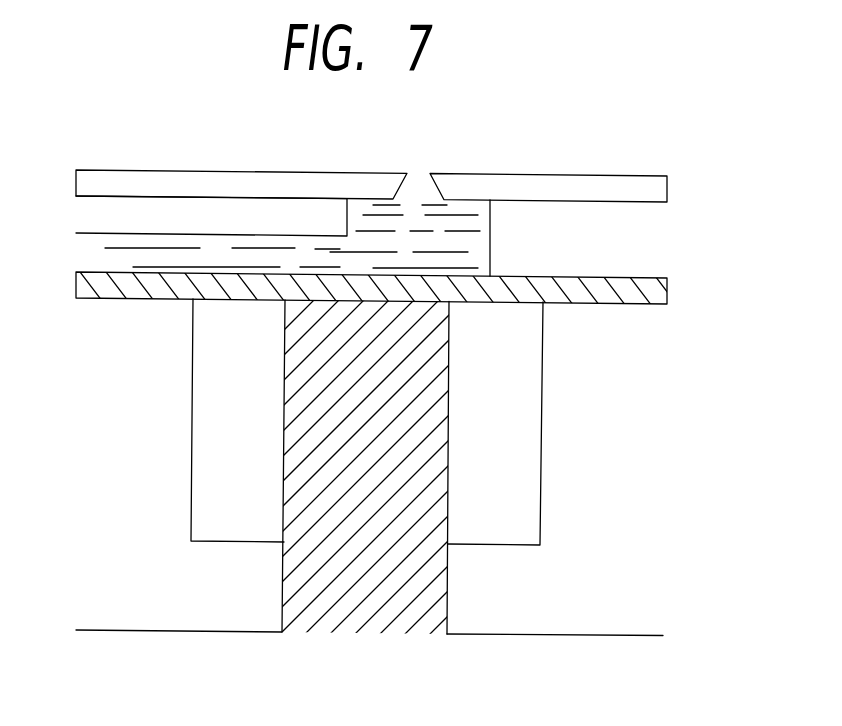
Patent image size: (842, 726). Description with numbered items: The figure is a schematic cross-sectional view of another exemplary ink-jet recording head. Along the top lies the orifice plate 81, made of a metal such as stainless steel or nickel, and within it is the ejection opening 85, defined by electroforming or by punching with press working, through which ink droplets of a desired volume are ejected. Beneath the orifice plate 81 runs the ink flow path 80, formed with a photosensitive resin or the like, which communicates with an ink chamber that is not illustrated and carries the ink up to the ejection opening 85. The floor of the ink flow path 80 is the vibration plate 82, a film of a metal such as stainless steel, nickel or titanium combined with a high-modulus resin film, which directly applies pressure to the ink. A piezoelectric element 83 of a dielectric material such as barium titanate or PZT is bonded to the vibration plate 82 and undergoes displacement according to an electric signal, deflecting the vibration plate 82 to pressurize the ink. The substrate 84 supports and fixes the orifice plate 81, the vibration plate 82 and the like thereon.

The ink flow path 80 is at (242, 208).
The orifice plate 81 is at (622, 185).
The vibration plate 82 is at (655, 290).
The piezoelectric element 83 is at (432, 568).
The substrate 84 is at (608, 393).
The ejection opening 85 is at (415, 187).